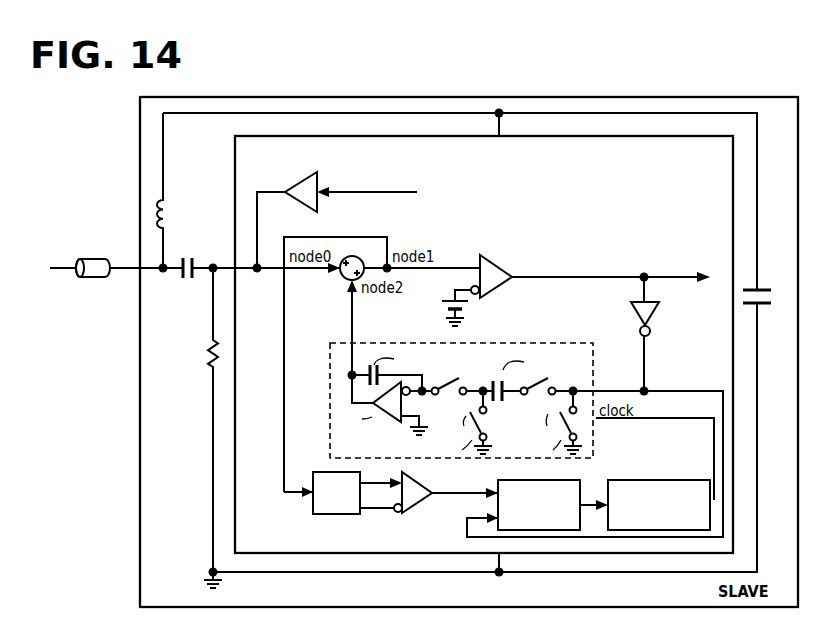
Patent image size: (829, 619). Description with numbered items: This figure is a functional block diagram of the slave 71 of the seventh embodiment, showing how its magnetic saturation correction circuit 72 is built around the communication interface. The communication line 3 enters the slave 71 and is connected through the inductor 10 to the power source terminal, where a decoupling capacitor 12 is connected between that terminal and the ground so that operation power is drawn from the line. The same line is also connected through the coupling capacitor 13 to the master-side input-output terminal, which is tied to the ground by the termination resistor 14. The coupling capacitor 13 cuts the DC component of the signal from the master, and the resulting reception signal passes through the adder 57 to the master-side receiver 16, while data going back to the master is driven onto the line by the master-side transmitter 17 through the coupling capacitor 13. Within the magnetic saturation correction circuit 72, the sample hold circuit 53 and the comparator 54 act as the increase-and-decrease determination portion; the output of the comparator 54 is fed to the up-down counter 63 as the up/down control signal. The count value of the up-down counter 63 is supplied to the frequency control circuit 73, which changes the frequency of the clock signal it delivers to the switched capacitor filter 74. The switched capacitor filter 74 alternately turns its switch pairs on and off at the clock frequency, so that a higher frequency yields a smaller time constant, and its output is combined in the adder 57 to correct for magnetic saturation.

The communication line 3 is at (90, 259).
The inductor 10 is at (165, 212).
The decoupling capacitor 12 is at (761, 290).
The coupling capacitor 13 is at (192, 258).
The termination resistor 14 is at (204, 353).
The master-side receiver 16 is at (498, 263).
The master-side transmitter 17 is at (309, 190).
The sample hold circuit 53 is at (339, 514).
The comparator 54 is at (418, 514).
The adder 57 is at (340, 278).
The up-down counter 63 is at (570, 480).
The slave 71 is at (465, 97).
The magnetic saturation correction circuit 72 is at (562, 333).
The frequency control circuit 73 is at (655, 480).
The switched capacitor filter 74 is at (500, 343).